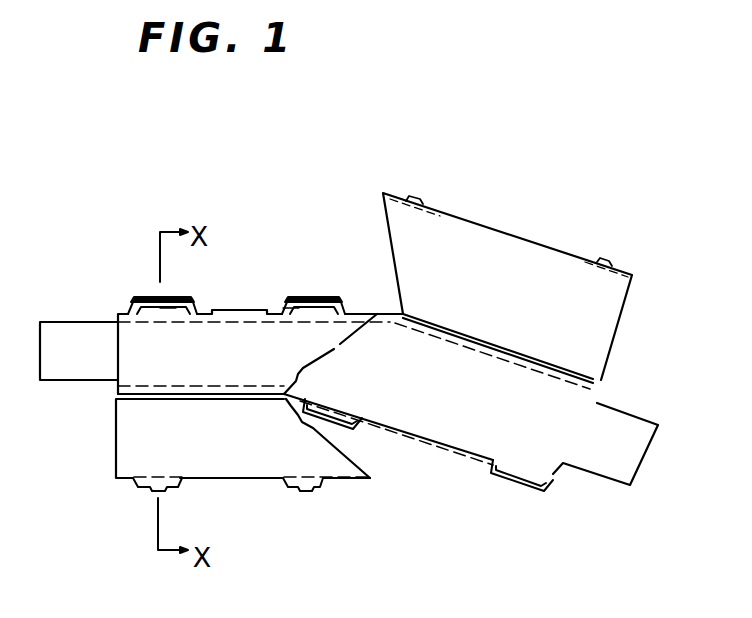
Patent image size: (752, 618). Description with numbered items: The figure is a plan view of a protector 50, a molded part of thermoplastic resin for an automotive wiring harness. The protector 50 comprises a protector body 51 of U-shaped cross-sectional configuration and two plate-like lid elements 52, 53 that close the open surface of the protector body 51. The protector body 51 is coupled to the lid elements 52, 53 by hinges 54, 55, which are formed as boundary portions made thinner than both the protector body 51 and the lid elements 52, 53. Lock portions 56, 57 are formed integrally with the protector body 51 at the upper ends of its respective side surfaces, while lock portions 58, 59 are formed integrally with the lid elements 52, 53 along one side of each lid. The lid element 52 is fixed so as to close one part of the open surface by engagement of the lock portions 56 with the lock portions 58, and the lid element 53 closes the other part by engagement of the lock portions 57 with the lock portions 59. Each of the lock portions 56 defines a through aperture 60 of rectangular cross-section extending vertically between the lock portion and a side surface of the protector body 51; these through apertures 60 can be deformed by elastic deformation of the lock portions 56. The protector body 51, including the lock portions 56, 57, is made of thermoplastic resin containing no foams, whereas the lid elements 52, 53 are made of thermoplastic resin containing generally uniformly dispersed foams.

The protector 50 is at (418, 500).
The protector body 51 is at (442, 423).
The lid element 52 is at (257, 452).
The lid element 53 is at (520, 245).
The hinge 54 is at (142, 400).
The hinge 55 is at (567, 371).
The lock portions 56 is at (182, 298).
The lock portions 57 is at (357, 432).
The lock portions 58 is at (137, 483).
The lock portions 59 is at (423, 202).
The through aperture 60 is at (168, 311).